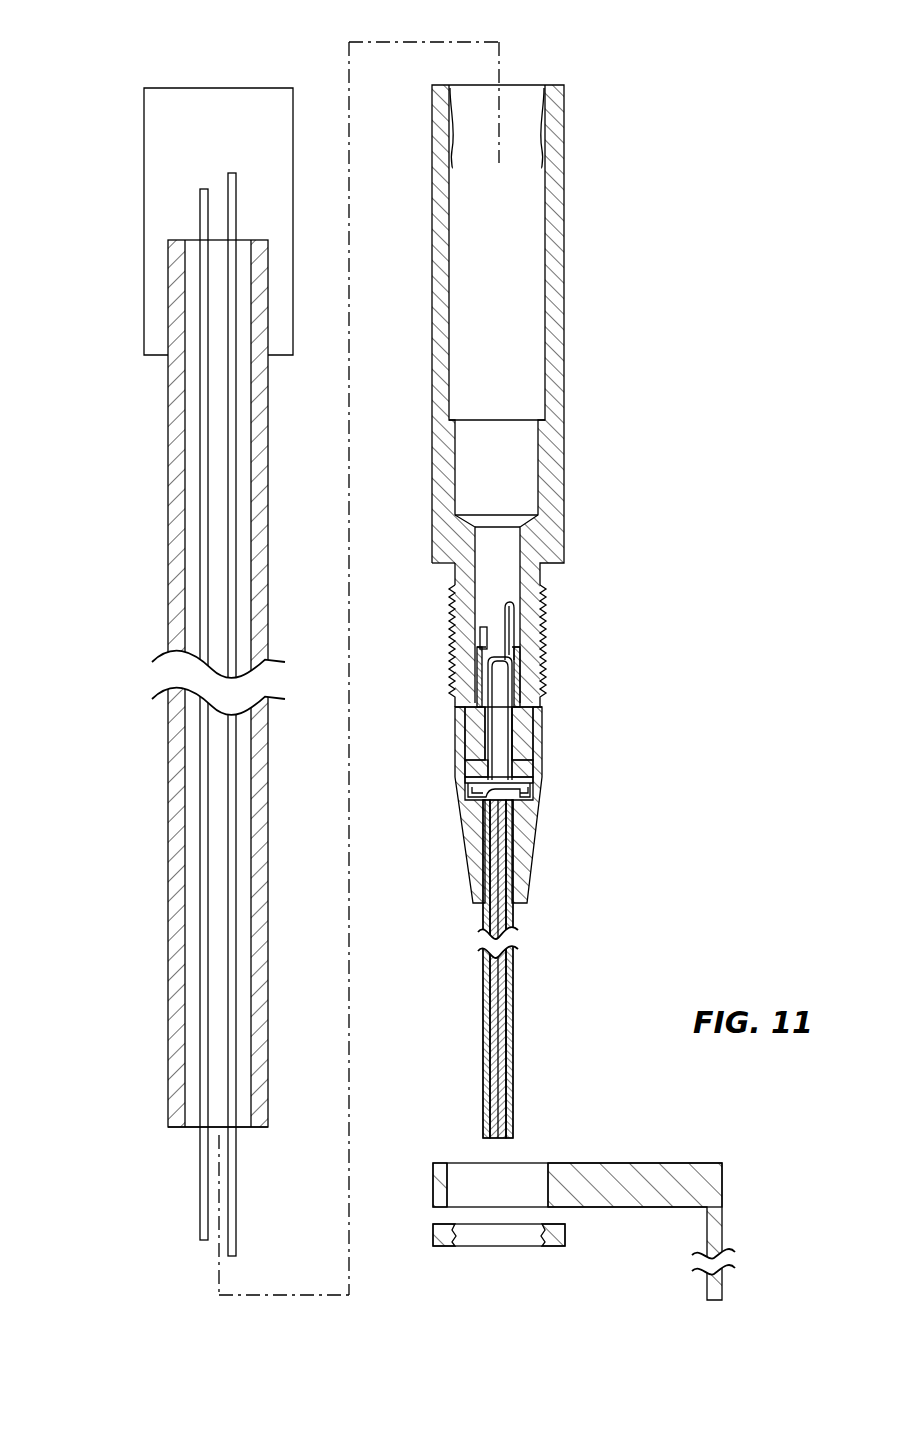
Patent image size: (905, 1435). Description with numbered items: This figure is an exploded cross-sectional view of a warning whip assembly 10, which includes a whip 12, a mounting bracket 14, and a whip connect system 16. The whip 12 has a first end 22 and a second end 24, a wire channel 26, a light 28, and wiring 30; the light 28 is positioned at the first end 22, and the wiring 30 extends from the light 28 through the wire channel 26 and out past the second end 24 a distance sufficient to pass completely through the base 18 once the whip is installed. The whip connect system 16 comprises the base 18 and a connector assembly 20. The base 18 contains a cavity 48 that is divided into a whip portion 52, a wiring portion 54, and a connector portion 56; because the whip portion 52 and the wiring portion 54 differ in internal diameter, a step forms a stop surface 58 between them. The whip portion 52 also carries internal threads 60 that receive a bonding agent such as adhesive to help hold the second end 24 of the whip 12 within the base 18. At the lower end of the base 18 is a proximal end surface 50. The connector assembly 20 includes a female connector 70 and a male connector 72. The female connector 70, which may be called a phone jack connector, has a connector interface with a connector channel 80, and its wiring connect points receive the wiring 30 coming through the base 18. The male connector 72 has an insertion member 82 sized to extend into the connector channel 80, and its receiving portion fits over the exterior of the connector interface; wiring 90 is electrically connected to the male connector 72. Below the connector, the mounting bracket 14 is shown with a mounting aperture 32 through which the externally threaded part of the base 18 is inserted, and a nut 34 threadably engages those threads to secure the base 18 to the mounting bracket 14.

The warning whip assembly 10 is at (740, 128).
The whip 12 is at (156, 767).
The mounting bracket 14 is at (623, 1163).
The whip connect system 16 is at (597, 262).
The base 18 is at (566, 170).
The connector assembly 20 is at (542, 780).
The first end 22 is at (168, 412).
The second end 24 is at (170, 1123).
The wire channel 26 is at (193, 928).
The light 28 is at (144, 190).
The wiring 30 is at (228, 507).
The mounting aperture 32 is at (532, 1170).
The nut 34 is at (565, 1237).
The cavity 48 is at (520, 107).
The proximal end surface 50 is at (453, 718).
The whip portion 52 is at (497, 252).
The wiring portion 54 is at (496, 484).
The connector portion 56 is at (497, 548).
The stop surface 58 is at (532, 396).
The internal threads 60 is at (543, 86).
The female connector 70 is at (470, 728).
The male connector 72 is at (462, 817).
The connector channel 80 is at (548, 723).
The insertion member 82 is at (527, 705).
The wiring 90 is at (513, 1008).